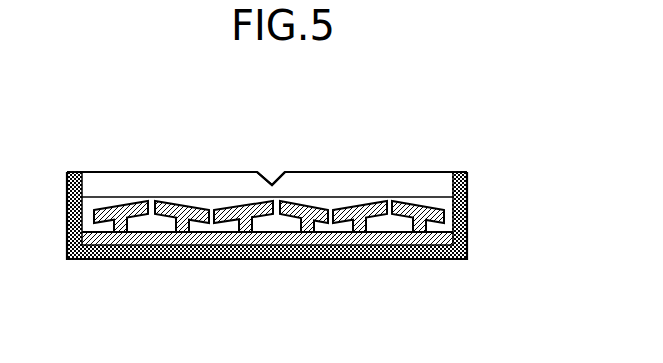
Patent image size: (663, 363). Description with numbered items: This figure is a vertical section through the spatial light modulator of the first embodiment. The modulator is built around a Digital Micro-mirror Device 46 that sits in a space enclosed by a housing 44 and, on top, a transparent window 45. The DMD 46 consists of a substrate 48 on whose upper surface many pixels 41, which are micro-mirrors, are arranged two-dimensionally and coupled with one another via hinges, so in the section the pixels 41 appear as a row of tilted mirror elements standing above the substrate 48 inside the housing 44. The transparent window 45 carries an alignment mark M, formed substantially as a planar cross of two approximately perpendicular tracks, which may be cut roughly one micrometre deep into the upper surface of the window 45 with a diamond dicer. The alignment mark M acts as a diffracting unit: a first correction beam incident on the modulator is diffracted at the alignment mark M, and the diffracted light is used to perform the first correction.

The pixels (micro-mirrors) 41 is at (317, 210).
The housing 44 is at (468, 205).
The transparent window 45 is at (422, 185).
The Digital Micro-mirror Device (DMD) 46 is at (245, 260).
The substrate 48 is at (383, 260).
The alignment mark M is at (272, 177).